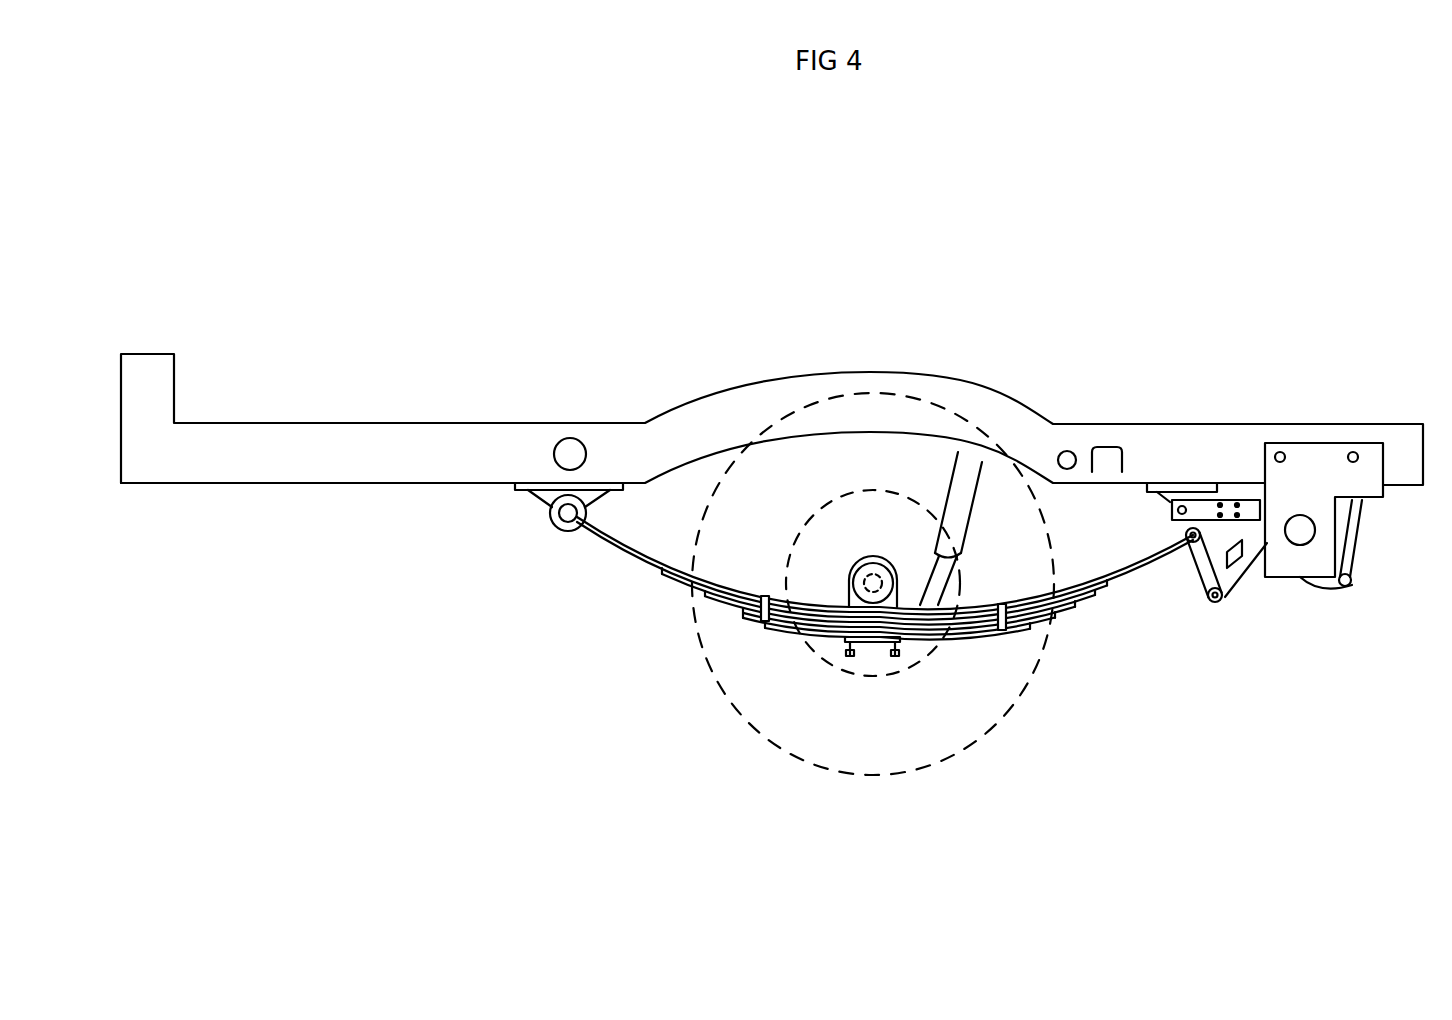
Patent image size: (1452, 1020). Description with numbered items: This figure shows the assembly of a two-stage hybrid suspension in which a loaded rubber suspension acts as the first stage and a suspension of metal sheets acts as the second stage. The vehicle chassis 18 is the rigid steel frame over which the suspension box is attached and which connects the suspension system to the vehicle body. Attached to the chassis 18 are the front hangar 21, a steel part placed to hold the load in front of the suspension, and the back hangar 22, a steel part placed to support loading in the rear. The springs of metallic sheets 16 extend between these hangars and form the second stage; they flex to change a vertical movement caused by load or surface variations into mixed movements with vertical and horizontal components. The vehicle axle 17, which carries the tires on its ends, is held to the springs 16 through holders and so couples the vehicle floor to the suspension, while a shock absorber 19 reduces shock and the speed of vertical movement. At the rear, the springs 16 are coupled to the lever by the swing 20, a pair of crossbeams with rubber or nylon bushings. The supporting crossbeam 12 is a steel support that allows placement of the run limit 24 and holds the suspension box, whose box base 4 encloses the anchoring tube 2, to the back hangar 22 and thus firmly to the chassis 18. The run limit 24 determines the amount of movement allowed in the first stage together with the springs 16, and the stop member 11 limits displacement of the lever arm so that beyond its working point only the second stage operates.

The anchoring tube 2 is at (1300, 548).
The box base 4 is at (1315, 441).
The stop member 11 is at (1233, 574).
The supporting crossbeam 12 is at (1240, 499).
The springs of metallic sheets 16 is at (765, 625).
The vehicle axle 17 is at (868, 578).
The vehicle chassis 18 is at (458, 487).
The shock absorber 19 is at (940, 490).
The swing 20 is at (1197, 582).
The front hangar 21 is at (566, 530).
The back hangar 22 is at (1180, 482).
The run limit 24 is at (1226, 499).